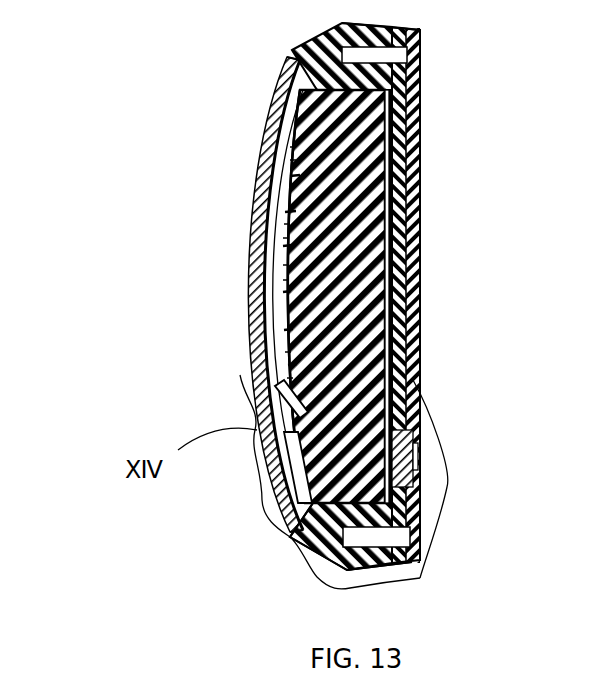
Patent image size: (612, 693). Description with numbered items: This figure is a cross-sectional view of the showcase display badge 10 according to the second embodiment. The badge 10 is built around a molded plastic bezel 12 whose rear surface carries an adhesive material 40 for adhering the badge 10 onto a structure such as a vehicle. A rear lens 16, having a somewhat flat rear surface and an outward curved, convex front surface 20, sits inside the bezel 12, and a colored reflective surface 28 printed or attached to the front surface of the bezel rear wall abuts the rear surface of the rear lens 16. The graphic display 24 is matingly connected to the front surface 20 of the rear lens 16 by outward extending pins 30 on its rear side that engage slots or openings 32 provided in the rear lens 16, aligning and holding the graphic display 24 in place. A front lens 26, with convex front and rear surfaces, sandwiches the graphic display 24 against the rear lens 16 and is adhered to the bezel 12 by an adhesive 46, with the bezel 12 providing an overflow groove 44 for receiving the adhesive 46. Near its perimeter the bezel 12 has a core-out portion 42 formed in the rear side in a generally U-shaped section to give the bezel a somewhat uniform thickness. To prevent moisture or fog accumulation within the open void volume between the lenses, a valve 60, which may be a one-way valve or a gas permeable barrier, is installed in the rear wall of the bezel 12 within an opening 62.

The showcase display badge 10 is at (140, 89).
The bezel 12 is at (317, 560).
The rear lens 16 is at (327, 183).
The front surface of rear lens 20 is at (298, 124).
The graphic display 24 is at (255, 348).
The front lens 26 is at (272, 196).
The colored reflective surface 28 is at (393, 147).
The pins 30 is at (290, 447).
The openings 32 is at (280, 412).
The adhesive material 40 is at (418, 195).
The core-out portion 42 is at (403, 57).
The overflow groove 44 is at (285, 80).
The adhesive 46 is at (322, 47).
The valve 60 is at (417, 460).
The opening 62 is at (398, 437).